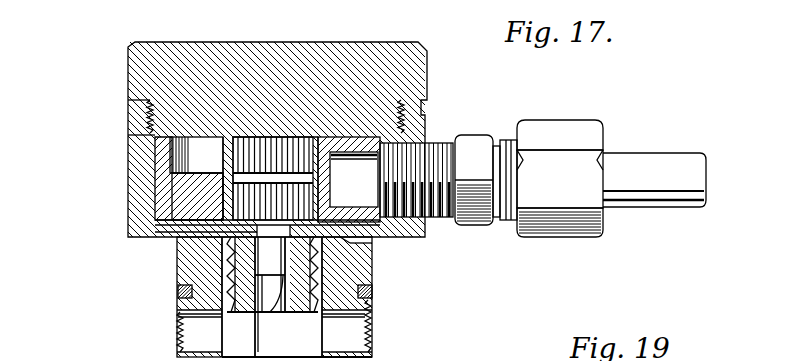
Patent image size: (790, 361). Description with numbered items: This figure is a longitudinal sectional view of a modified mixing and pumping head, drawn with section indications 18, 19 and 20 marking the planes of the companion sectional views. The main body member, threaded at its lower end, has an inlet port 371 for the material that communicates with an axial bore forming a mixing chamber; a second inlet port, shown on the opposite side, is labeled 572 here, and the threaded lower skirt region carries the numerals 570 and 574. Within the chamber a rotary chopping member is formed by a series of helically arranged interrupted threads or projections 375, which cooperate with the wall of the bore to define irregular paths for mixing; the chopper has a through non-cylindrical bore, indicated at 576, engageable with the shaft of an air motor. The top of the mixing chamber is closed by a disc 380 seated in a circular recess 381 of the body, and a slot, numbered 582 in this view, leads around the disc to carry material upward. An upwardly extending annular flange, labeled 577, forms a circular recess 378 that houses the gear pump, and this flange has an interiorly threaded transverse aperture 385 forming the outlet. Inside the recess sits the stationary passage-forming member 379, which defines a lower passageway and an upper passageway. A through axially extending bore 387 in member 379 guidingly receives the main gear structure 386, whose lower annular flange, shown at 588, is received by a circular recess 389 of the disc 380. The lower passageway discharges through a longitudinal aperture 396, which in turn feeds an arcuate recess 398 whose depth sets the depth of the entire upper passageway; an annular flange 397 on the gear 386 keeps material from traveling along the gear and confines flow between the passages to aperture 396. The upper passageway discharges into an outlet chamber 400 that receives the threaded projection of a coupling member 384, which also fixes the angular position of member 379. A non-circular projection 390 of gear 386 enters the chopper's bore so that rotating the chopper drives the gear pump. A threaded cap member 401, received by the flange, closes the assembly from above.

The threaded cap member 401 is at (150, 67).
The threaded plug ring 577 is at (140, 128).
The arcuate recess 398 is at (172, 147).
The stationary passage-forming member 379 is at (157, 173).
The circular recess 378 is at (160, 188).
The longitudinal aperture 396 is at (172, 204).
The annular flange 397 is at (250, 163).
The main gear structure 386 is at (267, 192).
The axially extending bore 387 is at (315, 136).
The circular recess 389 is at (298, 215).
The outlet chamber 400 is at (333, 153).
The transverse aperture 385 is at (442, 153).
The coupling member 384 is at (549, 130).
The disc 380 is at (192, 239).
The bottom wall 588 is at (192, 227).
The lower coupling nut 570 is at (212, 259).
The inner tube piece 574 is at (320, 283).
The internal thread 582 is at (352, 262).
The circular recess 381 is at (348, 231).
The non-circular projection 390 is at (256, 313).
The tapered insert 576 is at (281, 314).
The interrupted threads or projections 375 is at (232, 272).
The inlet port 371 is at (198, 350).
The right thread 572 is at (372, 326).
The section line 18- 18 is at (128, 135).
The section line 19- 19 is at (128, 220).
The section line 20- 20 is at (277, 80).